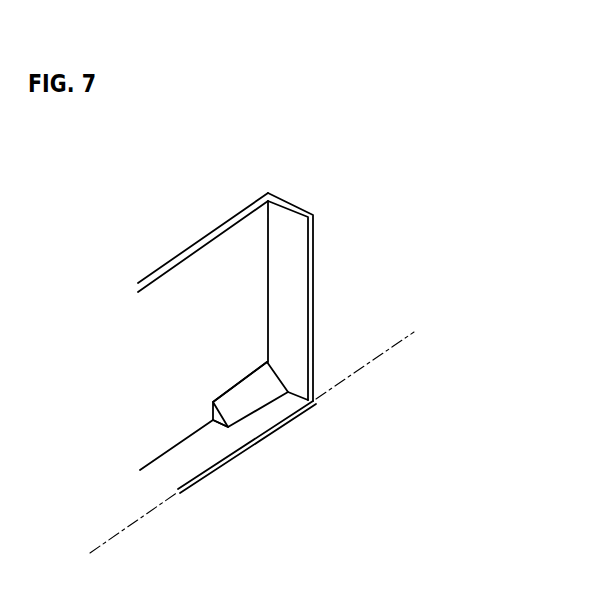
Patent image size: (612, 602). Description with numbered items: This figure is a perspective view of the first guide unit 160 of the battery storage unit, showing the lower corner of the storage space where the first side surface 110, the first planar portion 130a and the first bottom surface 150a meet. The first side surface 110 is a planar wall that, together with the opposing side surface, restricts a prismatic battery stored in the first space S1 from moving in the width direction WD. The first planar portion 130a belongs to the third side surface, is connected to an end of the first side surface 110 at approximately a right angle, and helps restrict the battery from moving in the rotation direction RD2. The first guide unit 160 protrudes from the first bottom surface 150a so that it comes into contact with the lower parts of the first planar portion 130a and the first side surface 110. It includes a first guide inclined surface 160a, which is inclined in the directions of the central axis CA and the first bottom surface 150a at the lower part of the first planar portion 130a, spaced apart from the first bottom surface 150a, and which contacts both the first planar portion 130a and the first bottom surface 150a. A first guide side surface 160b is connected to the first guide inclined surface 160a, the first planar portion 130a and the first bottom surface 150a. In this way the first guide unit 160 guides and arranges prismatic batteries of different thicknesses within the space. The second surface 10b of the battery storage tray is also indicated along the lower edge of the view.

The first side surface 110 is at (296, 220).
The first planar portion 130a is at (207, 257).
The first bottom surface 150a is at (197, 465).
The second surface 10b is at (277, 430).
The first guide unit 160 is at (274, 397).
The first guide inclined surface 160a is at (270, 378).
The first guide side surface 160b is at (217, 424).
The first space S1 is at (165, 365).
The central axis CA is at (266, 428).
The width direction WD is at (446, 305).
The rotation direction RD2 is at (520, 290).